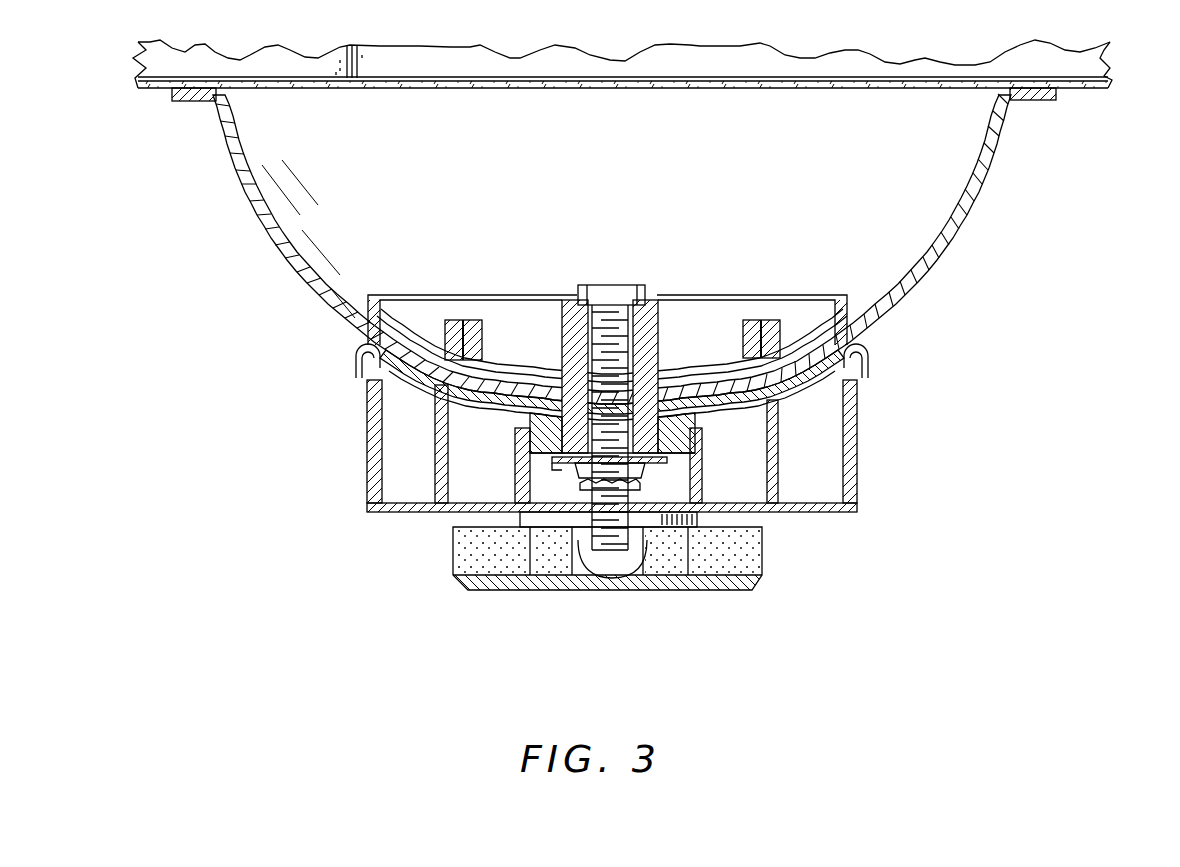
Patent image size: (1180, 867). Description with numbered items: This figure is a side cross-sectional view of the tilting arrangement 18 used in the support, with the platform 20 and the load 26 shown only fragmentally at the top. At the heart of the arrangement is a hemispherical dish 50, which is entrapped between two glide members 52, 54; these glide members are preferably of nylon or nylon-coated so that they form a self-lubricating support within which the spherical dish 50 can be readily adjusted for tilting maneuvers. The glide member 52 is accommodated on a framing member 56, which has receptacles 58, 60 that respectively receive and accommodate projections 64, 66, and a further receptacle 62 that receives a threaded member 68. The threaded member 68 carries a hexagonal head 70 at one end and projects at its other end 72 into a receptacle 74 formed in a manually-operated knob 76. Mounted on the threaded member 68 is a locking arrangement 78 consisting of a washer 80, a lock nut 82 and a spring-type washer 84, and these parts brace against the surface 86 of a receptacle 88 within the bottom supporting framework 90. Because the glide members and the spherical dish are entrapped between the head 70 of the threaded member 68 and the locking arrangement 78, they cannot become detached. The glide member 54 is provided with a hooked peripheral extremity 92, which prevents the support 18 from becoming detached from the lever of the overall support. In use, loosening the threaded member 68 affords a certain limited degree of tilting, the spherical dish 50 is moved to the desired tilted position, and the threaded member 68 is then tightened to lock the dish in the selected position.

The tilting arrangement 18 is at (939, 267).
The platform 20 is at (1112, 80).
The load 26 is at (701, 46).
The hemispherical dish 50 is at (1004, 157).
The glide member 52 is at (846, 306).
The glide member 54 is at (872, 362).
The framing member 56 is at (746, 361).
The receptacle 58 is at (746, 331).
The receptacle 60 is at (487, 339).
The receptacle 62 is at (568, 349).
The projection 64 is at (762, 318).
The projection 66 is at (464, 318).
The threaded member 68 is at (610, 330).
The hexagonal head 70 is at (607, 295).
The end 72 is at (605, 552).
The receptacle 74 is at (657, 532).
The manually-operated knob 76 is at (764, 558).
The locking arrangement 78 is at (580, 475).
The washer 80 is at (702, 455).
The lock nut 82 is at (638, 487).
The spring-type washer 84 is at (562, 456).
The surface 86 is at (550, 464).
The receptacle 88 is at (702, 471).
The bottom supporting framework 90 is at (858, 453).
The hooked peripheral extremity 92 is at (357, 366).